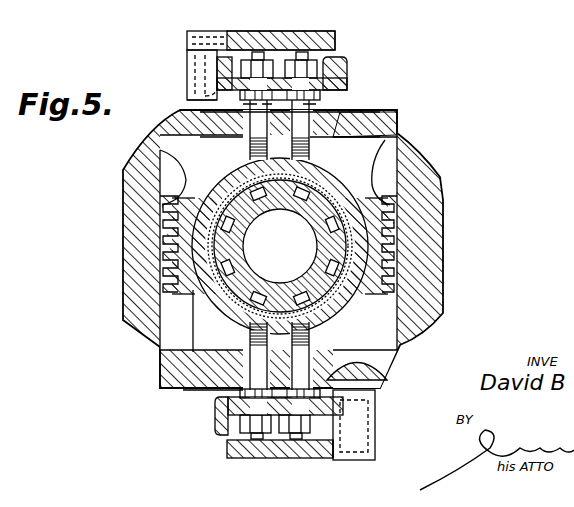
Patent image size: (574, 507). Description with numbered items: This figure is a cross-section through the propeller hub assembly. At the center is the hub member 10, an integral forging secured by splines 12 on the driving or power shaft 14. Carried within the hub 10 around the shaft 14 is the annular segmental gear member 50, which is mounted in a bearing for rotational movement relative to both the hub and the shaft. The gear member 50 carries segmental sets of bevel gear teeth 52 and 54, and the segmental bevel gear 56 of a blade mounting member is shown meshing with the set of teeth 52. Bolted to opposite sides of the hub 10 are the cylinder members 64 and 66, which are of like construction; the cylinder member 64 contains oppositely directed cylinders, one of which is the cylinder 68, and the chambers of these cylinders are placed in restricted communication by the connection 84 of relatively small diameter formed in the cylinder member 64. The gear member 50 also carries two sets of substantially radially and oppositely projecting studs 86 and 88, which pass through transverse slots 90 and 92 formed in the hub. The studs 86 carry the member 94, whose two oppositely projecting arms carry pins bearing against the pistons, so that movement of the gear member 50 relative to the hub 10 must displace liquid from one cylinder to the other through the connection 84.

The hub member 10 is at (433, 248).
The splines 12 is at (302, 190).
The power shaft 14 is at (277, 277).
The annular segmental gear member 50 is at (350, 174).
The segmental set of bevel gear teeth 52 is at (378, 160).
The segmental set of bevel gear teeth 54 is at (178, 158).
The segmental bevel gear 56 is at (392, 199).
The cylinder member 64 is at (166, 2).
The cylinder member 66 is at (378, 406).
The cylinder 68 is at (205, 96).
The connection 84 is at (283, 34).
The studs 86 is at (314, 118).
The studs 88 is at (255, 358).
The transverse slot 90 is at (395, 113).
The transverse slot 92 is at (393, 354).
The member 94 is at (348, 60).